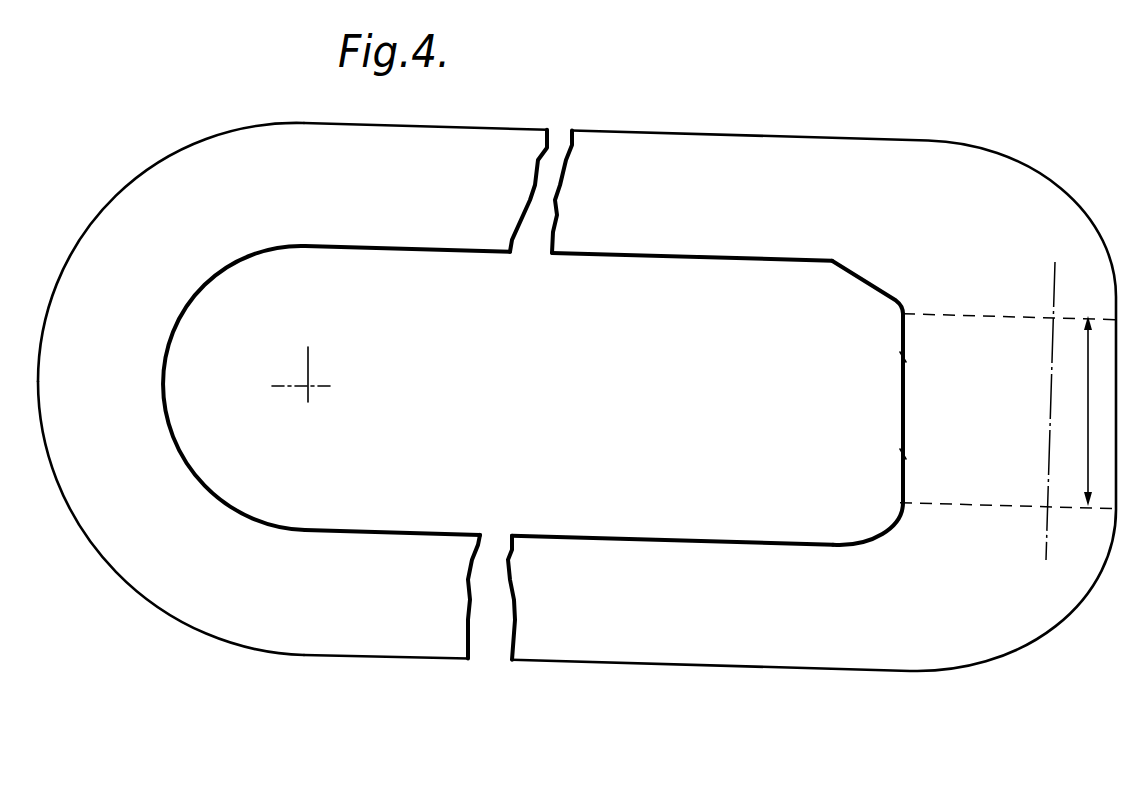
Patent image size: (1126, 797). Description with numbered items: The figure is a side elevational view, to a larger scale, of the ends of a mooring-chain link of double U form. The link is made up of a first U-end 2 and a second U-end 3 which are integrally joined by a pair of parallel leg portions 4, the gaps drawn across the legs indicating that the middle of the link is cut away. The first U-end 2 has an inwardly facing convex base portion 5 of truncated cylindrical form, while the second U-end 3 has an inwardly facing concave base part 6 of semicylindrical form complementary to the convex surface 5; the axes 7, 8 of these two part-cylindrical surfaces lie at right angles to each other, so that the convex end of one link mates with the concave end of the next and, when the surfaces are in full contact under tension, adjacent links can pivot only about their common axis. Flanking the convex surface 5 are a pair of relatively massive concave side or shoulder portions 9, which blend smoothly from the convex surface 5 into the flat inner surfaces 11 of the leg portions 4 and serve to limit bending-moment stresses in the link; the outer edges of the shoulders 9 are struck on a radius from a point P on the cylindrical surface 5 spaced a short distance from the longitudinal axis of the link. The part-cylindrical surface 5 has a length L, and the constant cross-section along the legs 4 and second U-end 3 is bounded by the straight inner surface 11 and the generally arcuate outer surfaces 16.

The first U-end 2 is at (1096, 500).
The second U-end 3 is at (95, 265).
The parallel leg portions 4 is at (592, 143).
The convex base portion 5 is at (946, 426).
The concave base part 6 is at (185, 316).
The axis of the convex part-cylindrical surface 7 is at (1008, 416).
The axis of the concave part-cylindrical surface 8 is at (310, 387).
The concave side portions (shoulder portions) 9 is at (862, 274).
The flat inner surfaces 11 is at (442, 252).
The outer surfaces 16 is at (132, 190).
The point P is at (908, 356).
The length L is at (1086, 410).